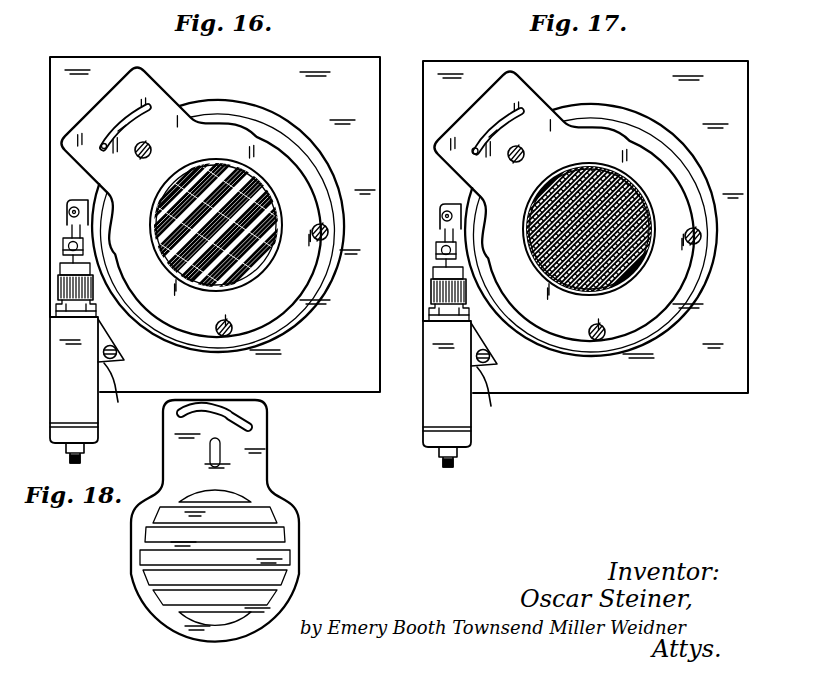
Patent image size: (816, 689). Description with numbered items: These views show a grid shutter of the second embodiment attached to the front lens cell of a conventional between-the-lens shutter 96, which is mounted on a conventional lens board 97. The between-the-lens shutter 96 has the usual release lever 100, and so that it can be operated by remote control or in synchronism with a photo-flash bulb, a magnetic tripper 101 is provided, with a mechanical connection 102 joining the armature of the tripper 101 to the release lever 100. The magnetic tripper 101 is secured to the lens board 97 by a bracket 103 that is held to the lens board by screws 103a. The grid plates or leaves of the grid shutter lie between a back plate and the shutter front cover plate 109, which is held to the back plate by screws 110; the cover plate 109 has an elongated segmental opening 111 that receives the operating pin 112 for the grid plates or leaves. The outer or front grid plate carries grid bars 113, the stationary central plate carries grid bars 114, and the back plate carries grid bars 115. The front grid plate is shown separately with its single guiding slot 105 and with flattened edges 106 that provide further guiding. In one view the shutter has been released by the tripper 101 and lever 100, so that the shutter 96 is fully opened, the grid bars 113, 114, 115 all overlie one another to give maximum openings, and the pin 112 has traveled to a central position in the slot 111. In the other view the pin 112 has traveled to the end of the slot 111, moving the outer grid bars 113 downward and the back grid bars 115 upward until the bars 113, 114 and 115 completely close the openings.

In FIG. 16, the between-the-lens shutter 96 is at (295, 147).
In FIG. 17, the between-the-lens shutter 96 is at (591, 230).
In FIG. 16, the lens board 97 is at (380, 118).
In FIG. 17, the lens board 97 is at (585, 240).
In FIG. 16, the release lever 100 is at (88, 207).
In FIG. 17, the release lever 100 is at (451, 204).
In FIG. 16, the magnetic tripper 101 is at (50, 357).
In FIG. 17, the magnetic tripper 101 is at (424, 391).
In FIG. 16, the mechanical connection 102 is at (63, 238).
In FIG. 17, the mechanical connection 102 is at (429, 272).
In FIG. 16, the bracket 103 is at (120, 360).
In FIG. 17, the bracket 103 is at (511, 355).
In FIG. 16, the screws 103a is at (118, 392).
In FIG. 17, the screws 103a is at (502, 395).
In FIG. 18, the guiding slot 105 is at (222, 456).
In FIG. 18, the flattened edges 106 is at (131, 568).
In FIG. 16, the shutter front cover plate 109 is at (251, 134).
In FIG. 17, the shutter front cover plate 109 is at (564, 211).
In FIG. 16, the screws 110 is at (152, 150).
In FIG. 17, the screws 110 is at (538, 153).
In FIG. 16, the elongated segmental opening 111 is at (143, 112).
In FIG. 17, the elongated segmental opening 111 is at (497, 121).
In FIG. 18, the elongated segmental opening 111 is at (214, 417).
In FIG. 16, the operating pin 112 is at (120, 128).
In FIG. 17, the operating pin 112 is at (467, 139).
In FIG. 17, the grid bars 113 is at (594, 229).
In FIG. 18, the grid bars 113 is at (270, 548).
In FIG. 17, the grid bars 114 is at (593, 229).
In FIG. 17, the grid bars 115 is at (589, 229).